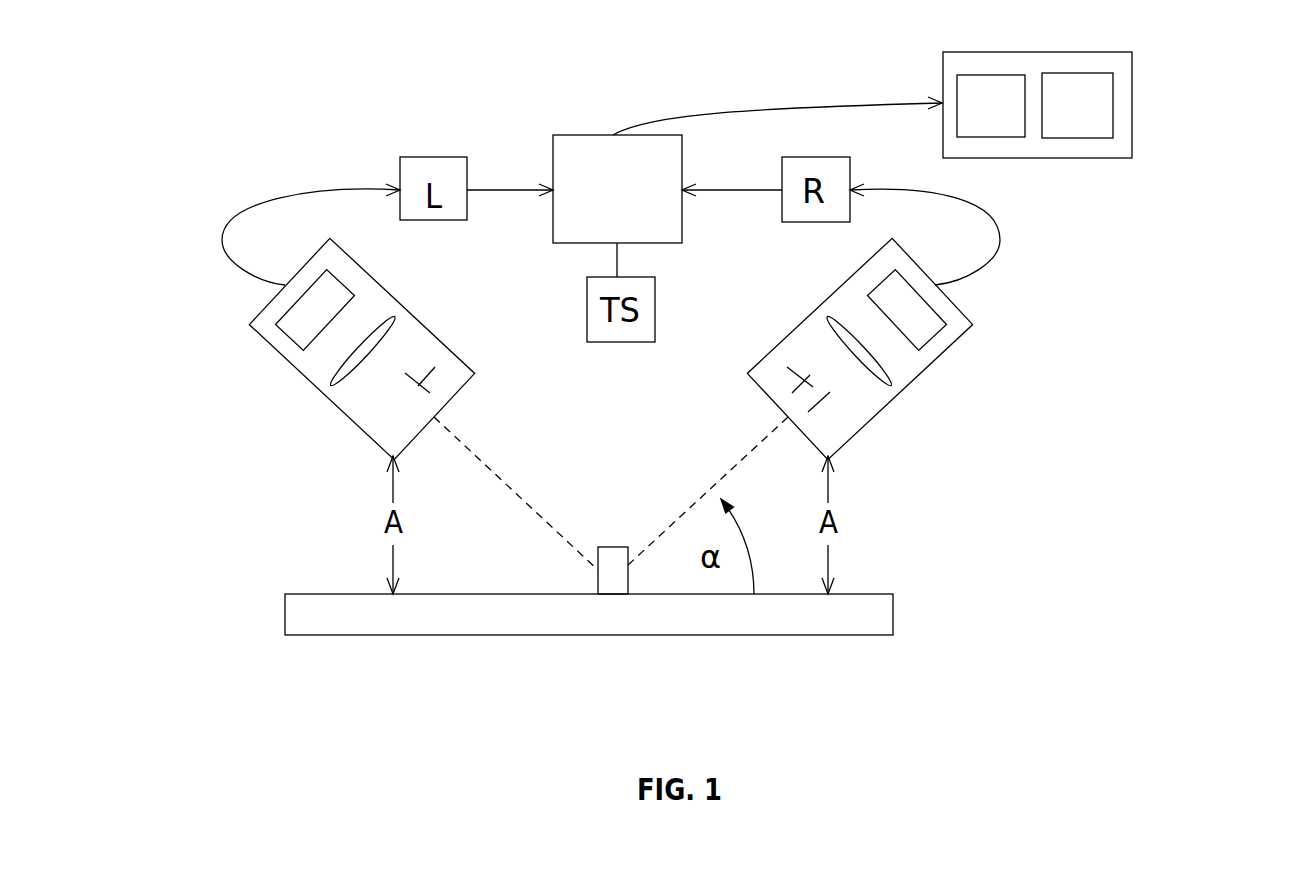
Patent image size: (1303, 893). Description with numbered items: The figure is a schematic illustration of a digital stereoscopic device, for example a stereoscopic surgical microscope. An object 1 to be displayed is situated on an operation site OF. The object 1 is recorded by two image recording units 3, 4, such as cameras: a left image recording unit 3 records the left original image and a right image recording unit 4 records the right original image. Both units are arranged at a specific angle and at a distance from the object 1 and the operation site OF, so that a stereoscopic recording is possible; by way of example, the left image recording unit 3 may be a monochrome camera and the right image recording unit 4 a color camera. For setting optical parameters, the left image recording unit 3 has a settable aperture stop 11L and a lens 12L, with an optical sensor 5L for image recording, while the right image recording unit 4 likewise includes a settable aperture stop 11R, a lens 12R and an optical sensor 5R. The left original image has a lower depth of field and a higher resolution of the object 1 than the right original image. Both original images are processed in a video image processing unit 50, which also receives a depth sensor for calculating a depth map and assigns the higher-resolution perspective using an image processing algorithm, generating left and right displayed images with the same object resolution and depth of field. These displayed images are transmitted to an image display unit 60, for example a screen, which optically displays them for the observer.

The object 1 is at (612, 572).
The left image recording unit 3 is at (392, 453).
The right image recording unit 4 is at (940, 302).
The optical sensor 5L is at (270, 307).
The optical sensor 5R is at (925, 338).
The settable aperture stop 11L is at (408, 407).
The settable aperture stop 11R is at (827, 402).
The lens 12L is at (345, 362).
The lens 12R is at (890, 383).
The video image processing unit 50 is at (553, 138).
The image display unit 60 is at (1133, 97).
The operation site OF is at (893, 613).